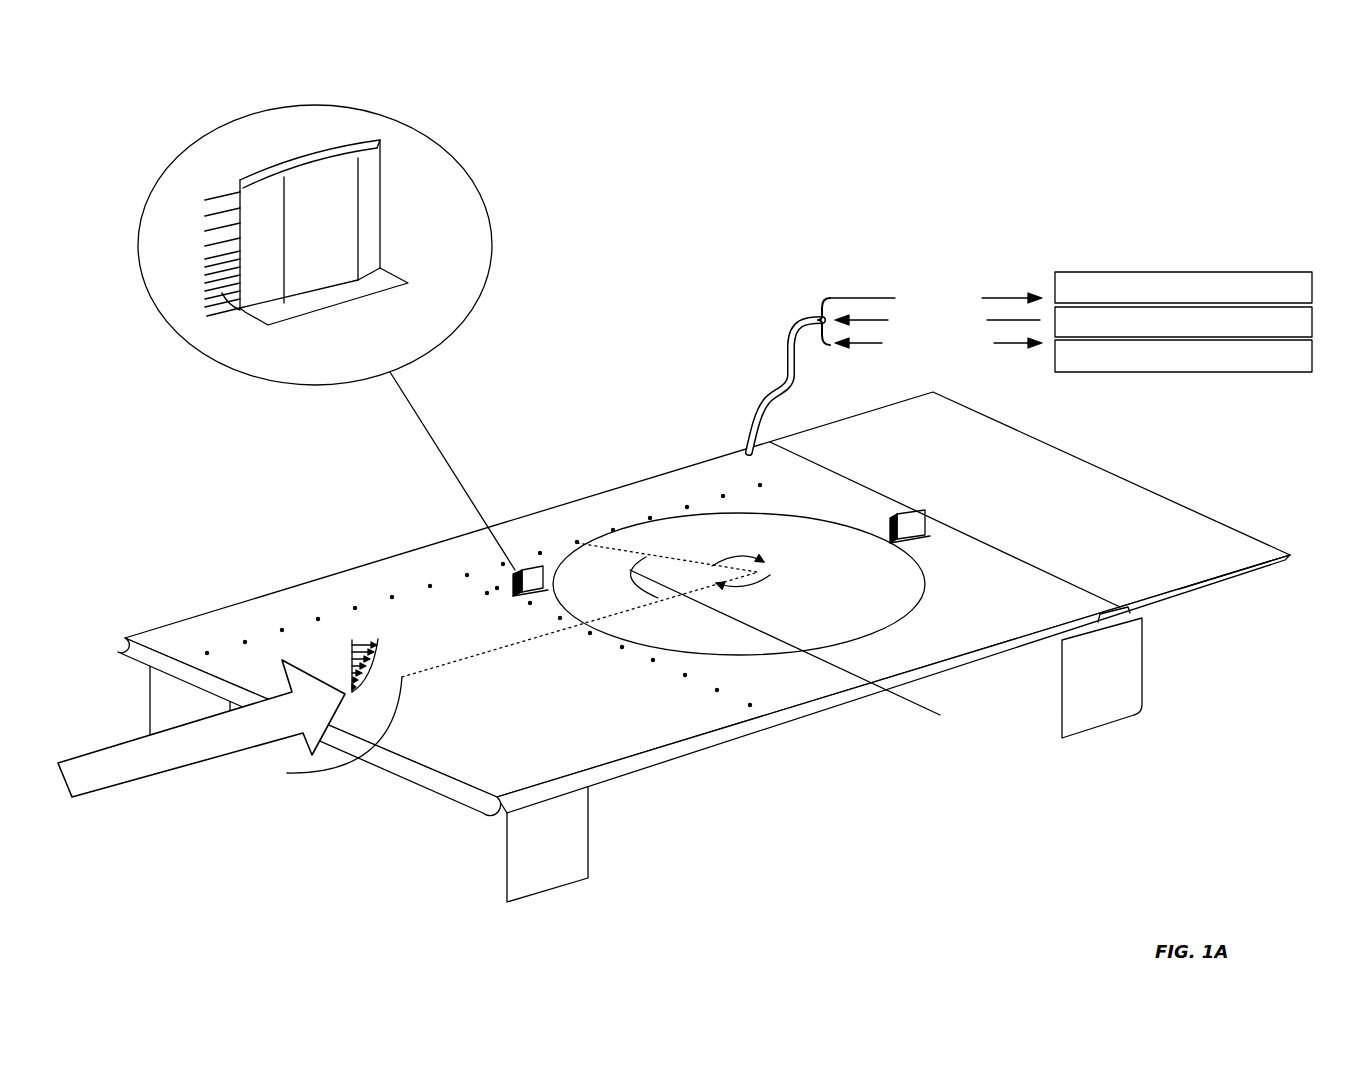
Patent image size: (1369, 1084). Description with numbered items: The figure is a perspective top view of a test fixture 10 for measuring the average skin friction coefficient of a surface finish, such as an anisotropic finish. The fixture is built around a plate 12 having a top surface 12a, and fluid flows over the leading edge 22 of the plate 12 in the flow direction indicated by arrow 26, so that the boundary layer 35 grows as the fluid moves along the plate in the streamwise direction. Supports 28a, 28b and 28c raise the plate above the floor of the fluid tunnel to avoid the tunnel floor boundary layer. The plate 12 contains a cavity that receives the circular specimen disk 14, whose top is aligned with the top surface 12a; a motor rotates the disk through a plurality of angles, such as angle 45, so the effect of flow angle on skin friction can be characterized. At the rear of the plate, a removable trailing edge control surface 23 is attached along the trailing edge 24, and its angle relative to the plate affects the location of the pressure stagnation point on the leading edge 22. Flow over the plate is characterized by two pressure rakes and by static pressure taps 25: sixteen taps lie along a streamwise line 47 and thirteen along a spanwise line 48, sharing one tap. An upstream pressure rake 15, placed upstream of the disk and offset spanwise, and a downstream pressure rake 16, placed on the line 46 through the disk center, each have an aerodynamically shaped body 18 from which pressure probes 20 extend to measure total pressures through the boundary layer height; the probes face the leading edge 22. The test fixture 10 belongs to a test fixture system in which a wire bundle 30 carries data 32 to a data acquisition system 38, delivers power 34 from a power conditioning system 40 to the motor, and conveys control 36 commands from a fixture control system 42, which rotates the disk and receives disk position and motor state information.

The upstream pressure rake 15 is at (678, 112).
The body 18 is at (324, 232).
The pressure probes 20 is at (205, 257).
The test fixture 10 is at (727, 635).
The wire bundle 30 is at (795, 333).
The data 32 is at (936, 297).
The power 34 is at (937, 319).
The control 36 is at (938, 343).
The data acquisition system 38 is at (1183, 287).
The power conditioning system 40 is at (1183, 322).
The fixture control system 42 is at (1183, 356).
The streamwise line 47 is at (577, 543).
The static pressure taps 25 is at (430, 588).
The boundary layer 35 is at (350, 643).
The downstream pressure rake 16 is at (918, 514).
The trailing edge control surface 23 is at (966, 532).
The trailing edge 24 is at (1265, 542).
The circular specimen disk 14 is at (739, 584).
The support 28c is at (172, 700).
The arrow 26 is at (201, 728).
The top surface 12a is at (727, 797).
The angle 45 is at (830, 649).
The spanwise line 48 is at (760, 707).
The line 46 is at (330, 730).
The plate 12 is at (707, 604).
The leading edge 22 is at (403, 763).
The support 28a is at (545, 836).
The support 28b is at (1105, 688).